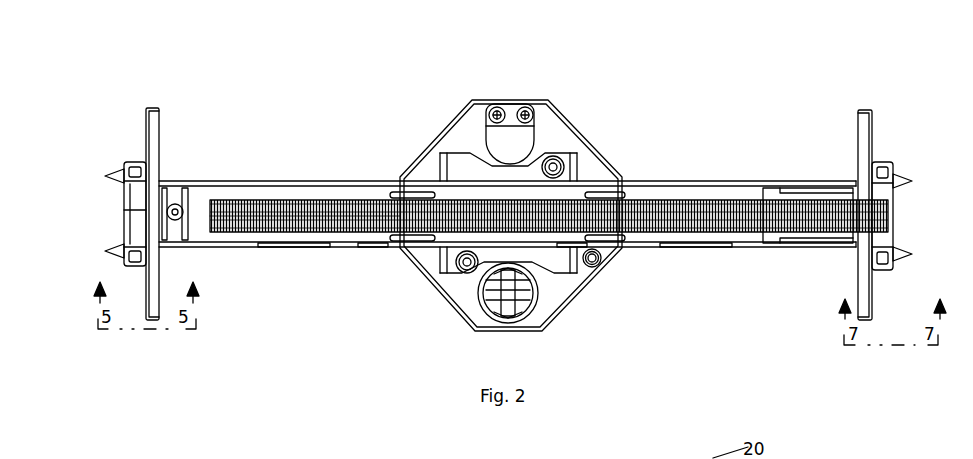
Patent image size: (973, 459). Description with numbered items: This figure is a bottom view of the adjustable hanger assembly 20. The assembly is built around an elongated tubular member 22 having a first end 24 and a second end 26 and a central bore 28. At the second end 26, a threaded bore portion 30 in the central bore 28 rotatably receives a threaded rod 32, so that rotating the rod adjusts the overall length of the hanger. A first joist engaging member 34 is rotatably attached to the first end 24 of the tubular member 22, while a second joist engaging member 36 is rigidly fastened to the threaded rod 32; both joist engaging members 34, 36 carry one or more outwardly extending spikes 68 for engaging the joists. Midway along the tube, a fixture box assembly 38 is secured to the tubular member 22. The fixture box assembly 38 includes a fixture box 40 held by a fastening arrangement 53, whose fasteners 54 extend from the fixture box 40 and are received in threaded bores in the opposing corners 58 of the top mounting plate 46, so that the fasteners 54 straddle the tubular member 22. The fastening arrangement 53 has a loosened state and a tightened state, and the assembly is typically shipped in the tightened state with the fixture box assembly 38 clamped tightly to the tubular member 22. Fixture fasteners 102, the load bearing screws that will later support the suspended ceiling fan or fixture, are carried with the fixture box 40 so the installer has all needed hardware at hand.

The adjustable hanger assembly 20 is at (348, 122).
The elongated tubular member 22 is at (739, 182).
The first end 24 is at (164, 181).
The second end 26 is at (852, 234).
The central bore 28 is at (201, 213).
The threaded bore portion 30 is at (841, 228).
The threaded rod 32 is at (270, 217).
The first joist engaging member 34 is at (157, 123).
The second joist engaging member 36 is at (862, 135).
The fixture box assembly 38 is at (585, 305).
The fixture box 40 is at (496, 213).
The top mounting plate 46 is at (508, 213).
The fastening arrangement 53 is at (563, 146).
The fasteners 54 is at (561, 166).
The opposing corners 58 is at (566, 167).
The outwardly extending spikes 68 is at (110, 176).
The fixture fasteners 102 is at (525, 106).